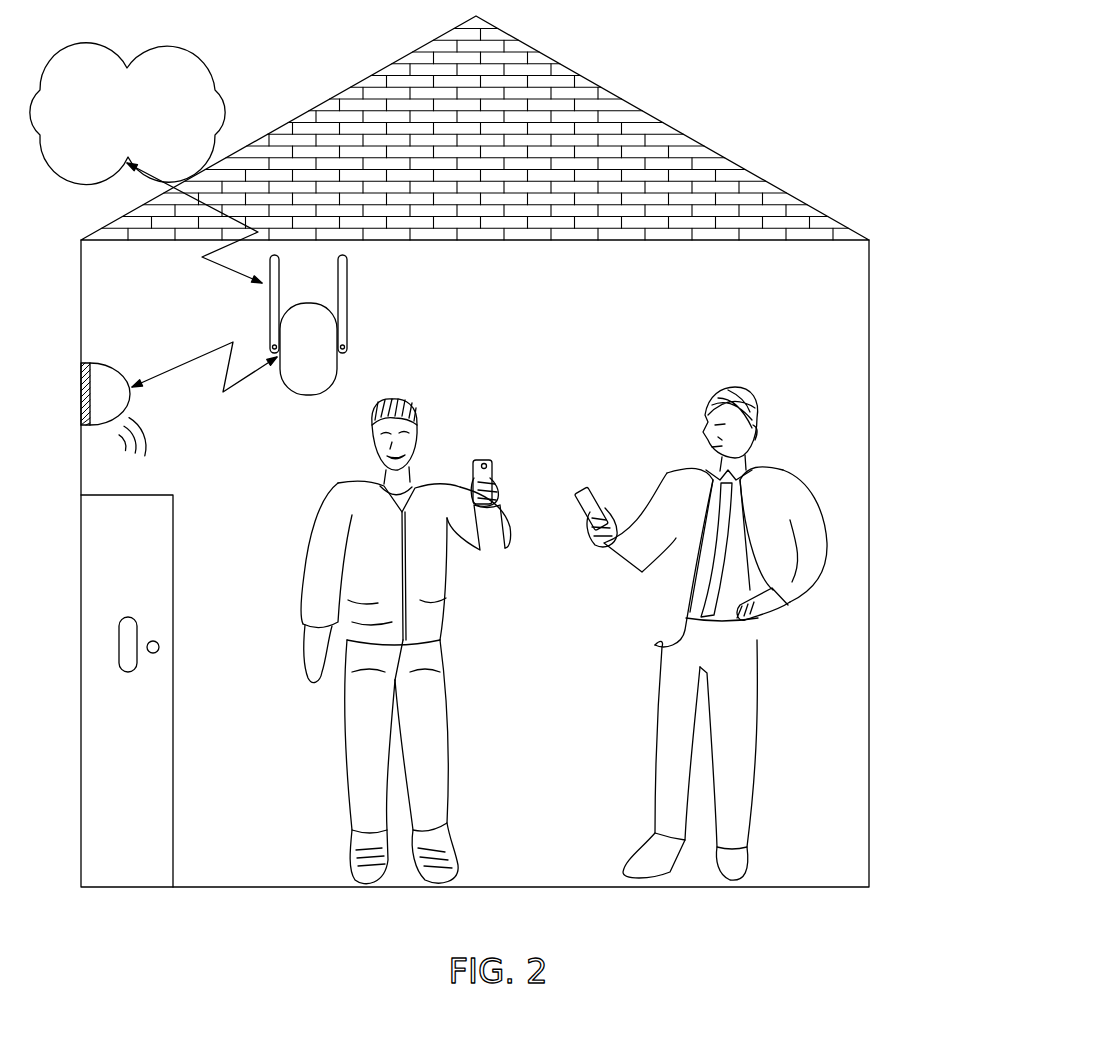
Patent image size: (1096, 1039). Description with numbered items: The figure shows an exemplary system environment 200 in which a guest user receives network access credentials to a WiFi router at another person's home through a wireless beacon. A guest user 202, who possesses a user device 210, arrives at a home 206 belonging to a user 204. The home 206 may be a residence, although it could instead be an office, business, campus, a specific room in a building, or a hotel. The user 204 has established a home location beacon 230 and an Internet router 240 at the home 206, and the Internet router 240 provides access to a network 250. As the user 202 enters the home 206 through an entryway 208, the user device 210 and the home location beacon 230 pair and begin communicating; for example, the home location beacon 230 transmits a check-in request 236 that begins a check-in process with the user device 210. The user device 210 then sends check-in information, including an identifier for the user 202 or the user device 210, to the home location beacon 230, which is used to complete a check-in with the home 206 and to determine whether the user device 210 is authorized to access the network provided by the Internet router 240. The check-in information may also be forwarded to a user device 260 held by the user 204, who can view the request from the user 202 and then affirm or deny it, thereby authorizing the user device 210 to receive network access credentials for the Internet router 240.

The environment 200 is at (739, 78).
The home 206 is at (453, 276).
The network 250 is at (107, 126).
The Internet router 240 is at (349, 343).
The home location beacon 230 is at (110, 362).
The check-in request 236 is at (152, 436).
The entryway 208 is at (176, 503).
The user 202 is at (405, 400).
The user device 210 is at (484, 458).
The user 204 is at (734, 385).
The user device 260 is at (592, 488).